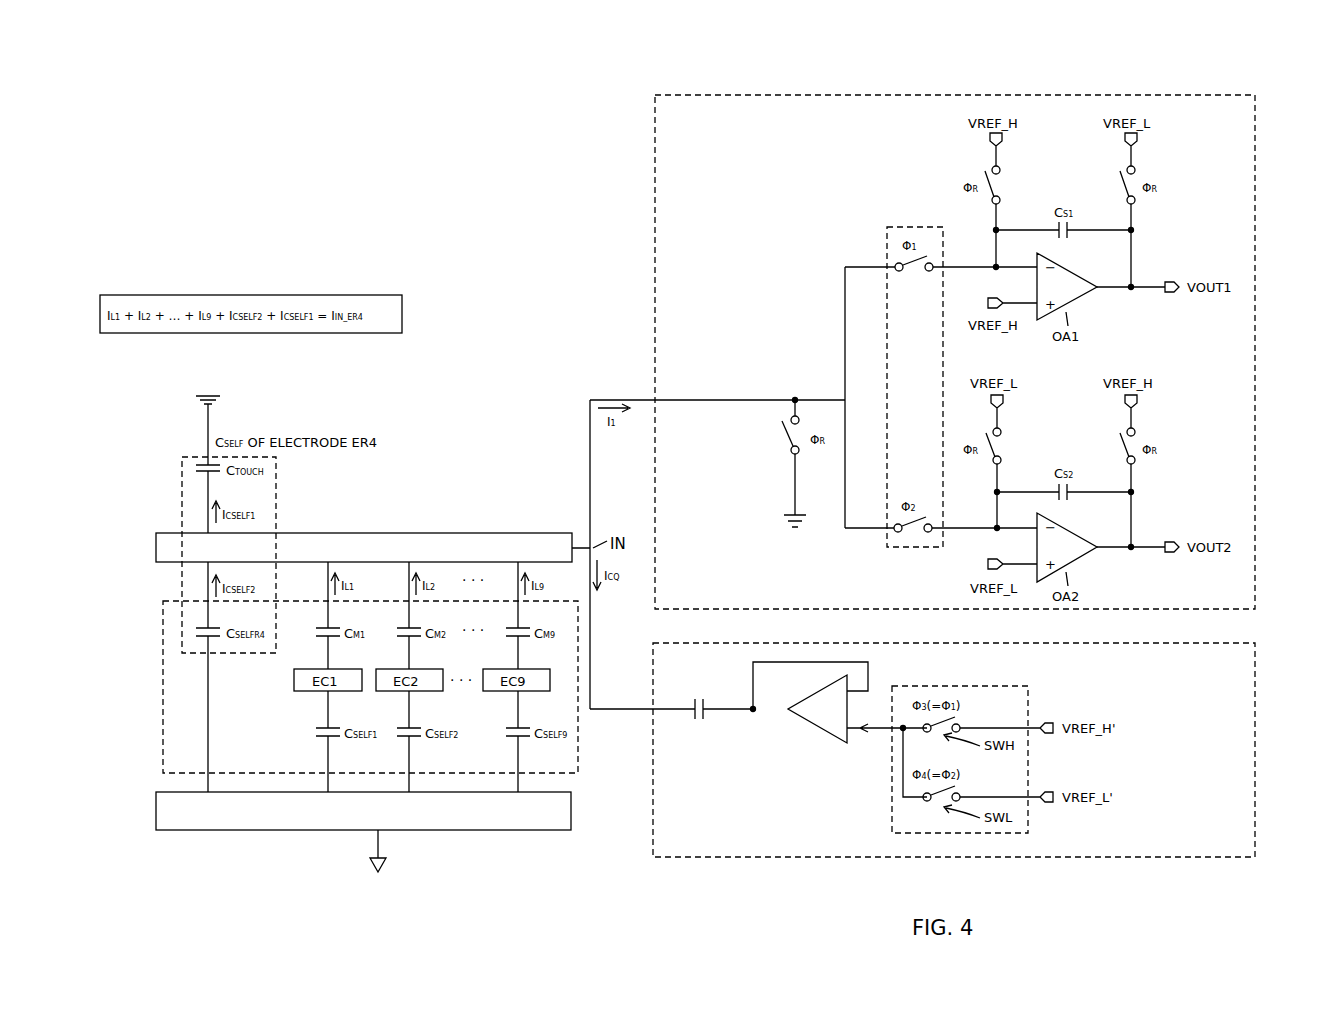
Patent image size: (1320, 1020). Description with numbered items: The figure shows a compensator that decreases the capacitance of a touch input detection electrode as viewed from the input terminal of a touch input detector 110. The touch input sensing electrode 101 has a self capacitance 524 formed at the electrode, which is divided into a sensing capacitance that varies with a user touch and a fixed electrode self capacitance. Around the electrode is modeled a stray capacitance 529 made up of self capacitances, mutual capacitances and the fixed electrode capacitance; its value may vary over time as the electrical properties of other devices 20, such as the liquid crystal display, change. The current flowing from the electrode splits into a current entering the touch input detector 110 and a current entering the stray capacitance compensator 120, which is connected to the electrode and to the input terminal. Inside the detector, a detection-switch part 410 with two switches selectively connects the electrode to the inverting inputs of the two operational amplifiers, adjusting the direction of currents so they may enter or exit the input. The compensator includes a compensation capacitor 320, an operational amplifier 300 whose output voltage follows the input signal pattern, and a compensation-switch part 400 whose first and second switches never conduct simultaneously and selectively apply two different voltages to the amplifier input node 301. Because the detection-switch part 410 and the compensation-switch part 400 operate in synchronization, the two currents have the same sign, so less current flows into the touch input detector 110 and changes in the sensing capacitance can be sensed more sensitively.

The touch input detector 110 is at (993, 95).
The stray capacitance compensator 120 is at (959, 643).
The detection-switch part 410 is at (918, 228).
The compensation-switch part 400 is at (966, 686).
The self capacitance 524 is at (177, 457).
The stray capacitance 529 is at (177, 602).
The touch input sensing electrode 101 is at (175, 534).
The other devices 20 is at (176, 793).
The compensation capacitor 320 is at (719, 727).
The operational amplifier 300 is at (813, 727).
The input node of buffer 301 is at (862, 745).